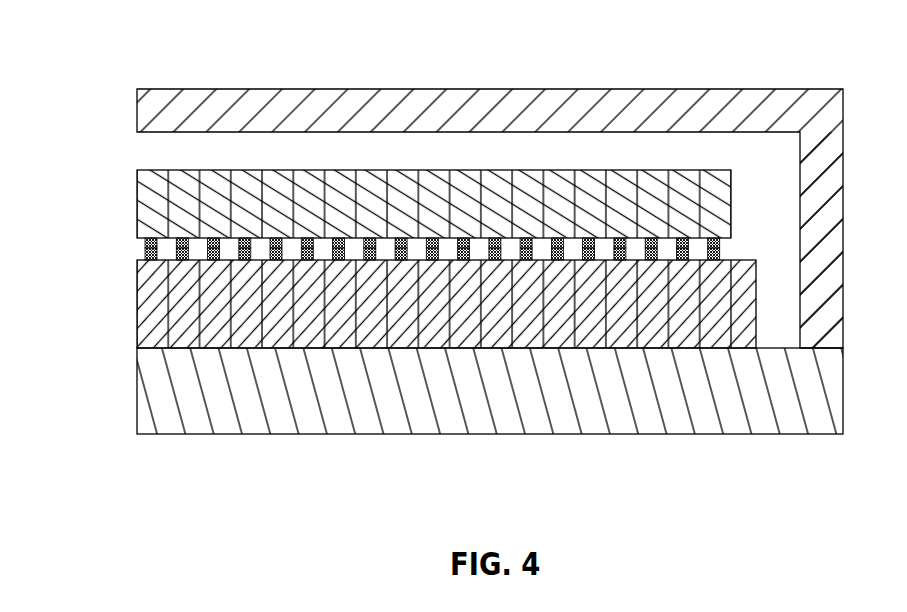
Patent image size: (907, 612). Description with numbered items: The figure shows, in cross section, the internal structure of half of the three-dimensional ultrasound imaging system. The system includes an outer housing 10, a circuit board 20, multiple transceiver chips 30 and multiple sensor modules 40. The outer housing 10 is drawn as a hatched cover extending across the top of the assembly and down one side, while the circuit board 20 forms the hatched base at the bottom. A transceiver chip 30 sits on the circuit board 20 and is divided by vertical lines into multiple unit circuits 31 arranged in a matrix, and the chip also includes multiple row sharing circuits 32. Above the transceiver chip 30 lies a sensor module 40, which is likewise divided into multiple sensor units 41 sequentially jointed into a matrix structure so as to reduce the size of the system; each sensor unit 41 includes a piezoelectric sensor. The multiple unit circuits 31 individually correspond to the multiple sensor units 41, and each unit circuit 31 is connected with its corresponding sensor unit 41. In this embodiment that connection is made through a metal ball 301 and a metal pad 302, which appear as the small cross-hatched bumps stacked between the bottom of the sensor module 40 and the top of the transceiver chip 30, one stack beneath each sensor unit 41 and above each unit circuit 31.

The outer housing 10 is at (681, 107).
The circuit board 20 is at (623, 410).
The transceiver chip 30 is at (758, 266).
The unit circuit 31 is at (137, 330).
The row sharing circuit 32 is at (747, 318).
The sensor module 40 is at (720, 184).
The sensor unit 41 is at (140, 187).
The metal ball 301 is at (143, 242).
The metal pad 302 is at (143, 253).